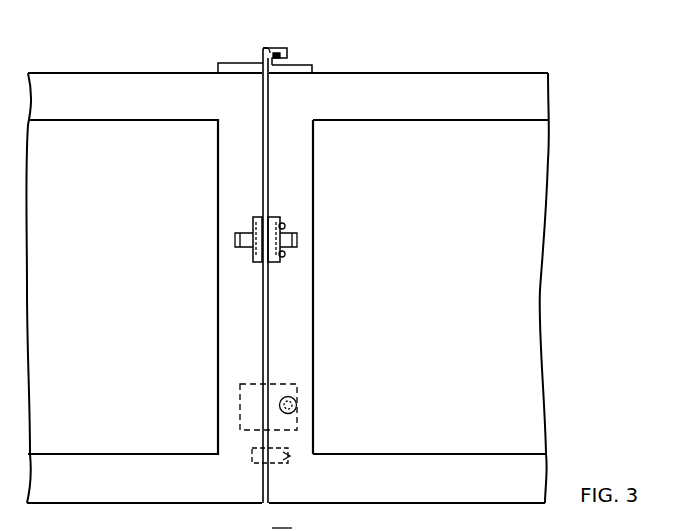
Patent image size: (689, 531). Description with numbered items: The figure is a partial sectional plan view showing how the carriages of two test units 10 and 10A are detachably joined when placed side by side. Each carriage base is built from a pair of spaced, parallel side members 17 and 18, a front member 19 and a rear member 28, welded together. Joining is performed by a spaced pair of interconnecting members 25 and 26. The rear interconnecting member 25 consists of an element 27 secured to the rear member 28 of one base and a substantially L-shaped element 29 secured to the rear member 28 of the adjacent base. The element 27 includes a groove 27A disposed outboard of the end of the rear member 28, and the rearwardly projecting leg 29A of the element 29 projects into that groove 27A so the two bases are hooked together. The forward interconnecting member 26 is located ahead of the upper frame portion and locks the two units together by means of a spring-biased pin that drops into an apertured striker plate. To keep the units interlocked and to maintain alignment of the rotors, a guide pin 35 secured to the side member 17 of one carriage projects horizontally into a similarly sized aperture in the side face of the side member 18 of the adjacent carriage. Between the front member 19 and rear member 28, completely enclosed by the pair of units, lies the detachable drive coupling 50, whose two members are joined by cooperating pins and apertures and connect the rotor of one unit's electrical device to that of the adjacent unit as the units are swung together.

The test unit 10 is at (125, 285).
The adjacent test unit 10A is at (446, 272).
The side member 17 is at (228, 393).
The side member 18 is at (308, 303).
The front member 19 is at (158, 497).
The interconnecting member 25 is at (268, 48).
The interconnecting member 26 is at (278, 393).
The element 27 is at (236, 59).
The groove 27A is at (262, 48).
The rear member 28 is at (157, 77).
The element 29 is at (305, 65).
The leg 29A is at (282, 54).
The pin 35 is at (256, 463).
The drive coupling 50 is at (278, 216).